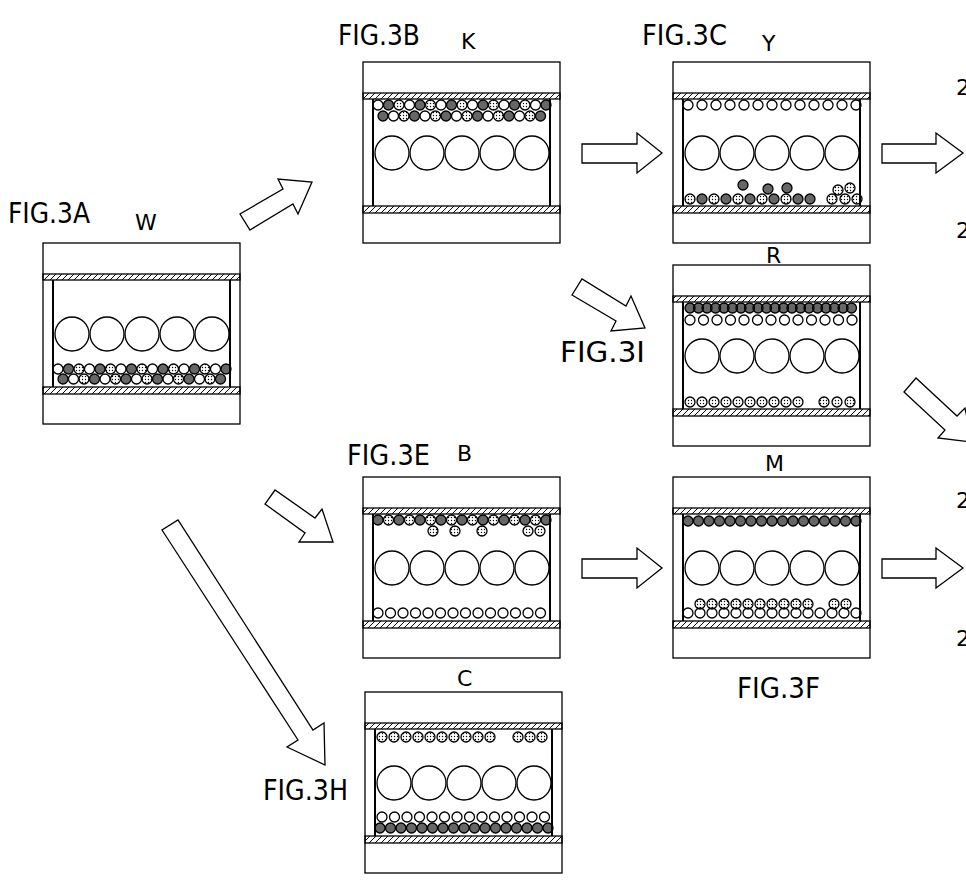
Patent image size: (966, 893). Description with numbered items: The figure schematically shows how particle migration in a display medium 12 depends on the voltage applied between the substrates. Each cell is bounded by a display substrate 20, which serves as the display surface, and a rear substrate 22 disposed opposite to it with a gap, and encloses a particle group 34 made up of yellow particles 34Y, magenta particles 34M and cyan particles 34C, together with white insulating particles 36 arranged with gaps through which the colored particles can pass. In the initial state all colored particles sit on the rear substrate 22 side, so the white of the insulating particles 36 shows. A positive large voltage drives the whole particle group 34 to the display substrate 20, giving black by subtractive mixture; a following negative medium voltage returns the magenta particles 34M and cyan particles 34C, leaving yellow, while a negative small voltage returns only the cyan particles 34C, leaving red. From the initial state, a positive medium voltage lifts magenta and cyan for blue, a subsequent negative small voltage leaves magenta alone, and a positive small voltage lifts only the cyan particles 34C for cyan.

In FIG. 3A, the display medium 12 is at (198, 244).
In FIG. 3B, the display medium 12 is at (554, 62).
In FIG. 3C, the display medium 12 is at (854, 62).
In FIG. 3I, the display medium 12 is at (880, 279).
In FIG. 3E, the display medium 12 is at (517, 478).
In FIG. 3F, the display medium 12 is at (881, 496).
In FIG. 3H, the display medium 12 is at (573, 708).
In FIG. 3A, the display substrate 20 is at (40, 243).
In FIG. 3B, the display substrate 20 is at (360, 62).
In FIG. 3C, the display substrate 20 is at (670, 62).
In FIG. 3I, the display substrate 20 is at (670, 265).
In FIG. 3E, the display substrate 20 is at (360, 477).
In FIG. 3F, the display substrate 20 is at (670, 477).
In FIG. 3H, the display substrate 20 is at (362, 692).
In FIG. 3A, the rear substrate 22 is at (40, 387).
In FIG. 3B, the rear substrate 22 is at (360, 206).
In FIG. 3C, the rear substrate 22 is at (670, 206).
In FIG. 3I, the rear substrate 22 is at (670, 409).
In FIG. 3E, the rear substrate 22 is at (360, 621).
In FIG. 3F, the rear substrate 22 is at (670, 621).
In FIG. 3H, the rear substrate 22 is at (362, 836).
In FIG. 3A, the particle group 34 is at (311, 365).
In FIG. 3A, the yellow particles 34Y is at (226, 367).
In FIG. 3B, the yellow particles 34Y is at (548, 97).
In FIG. 3C, the yellow particles 34Y is at (856, 104).
In FIG. 3I, the yellow particles 34Y is at (859, 325).
In FIG. 3E, the yellow particles 34Y is at (546, 612).
In FIG. 3F, the yellow particles 34Y is at (712, 616).
In FIG. 3H, the yellow particles 34Y is at (551, 817).
In FIG. 3A, the magenta particles 34M is at (208, 383).
In FIG. 3B, the magenta particles 34M is at (528, 119).
In FIG. 3C, the magenta particles 34M is at (820, 193).
In FIG. 3I, the magenta particles 34M is at (862, 310).
In FIG. 3E, the magenta particles 34M is at (510, 512).
In FIG. 3F, the magenta particles 34M is at (856, 520).
In FIG. 3H, the magenta particles 34M is at (551, 830).
In FIG. 3A, the cyan particles 34C is at (204, 386).
In FIG. 3B, the cyan particles 34C is at (523, 129).
In FIG. 3C, the cyan particles 34C is at (843, 202).
In FIG. 3I, the cyan particles 34C is at (859, 403).
In FIG. 3E, the cyan particles 34C is at (541, 530).
In FIG. 3F, the cyan particles 34C is at (852, 602).
In FIG. 3H, the cyan particles 34C is at (551, 736).
In FIG. 3A, the insulating particles 36 is at (218, 326).
In FIG. 3B, the insulating particles 36 is at (537, 160).
In FIG. 3C, the insulating particles 36 is at (849, 144).
In FIG. 3I, the insulating particles 36 is at (693, 358).
In FIG. 3E, the insulating particles 36 is at (544, 568).
In FIG. 3F, the insulating particles 36 is at (848, 562).
In FIG. 3H, the insulating particles 36 is at (549, 783).